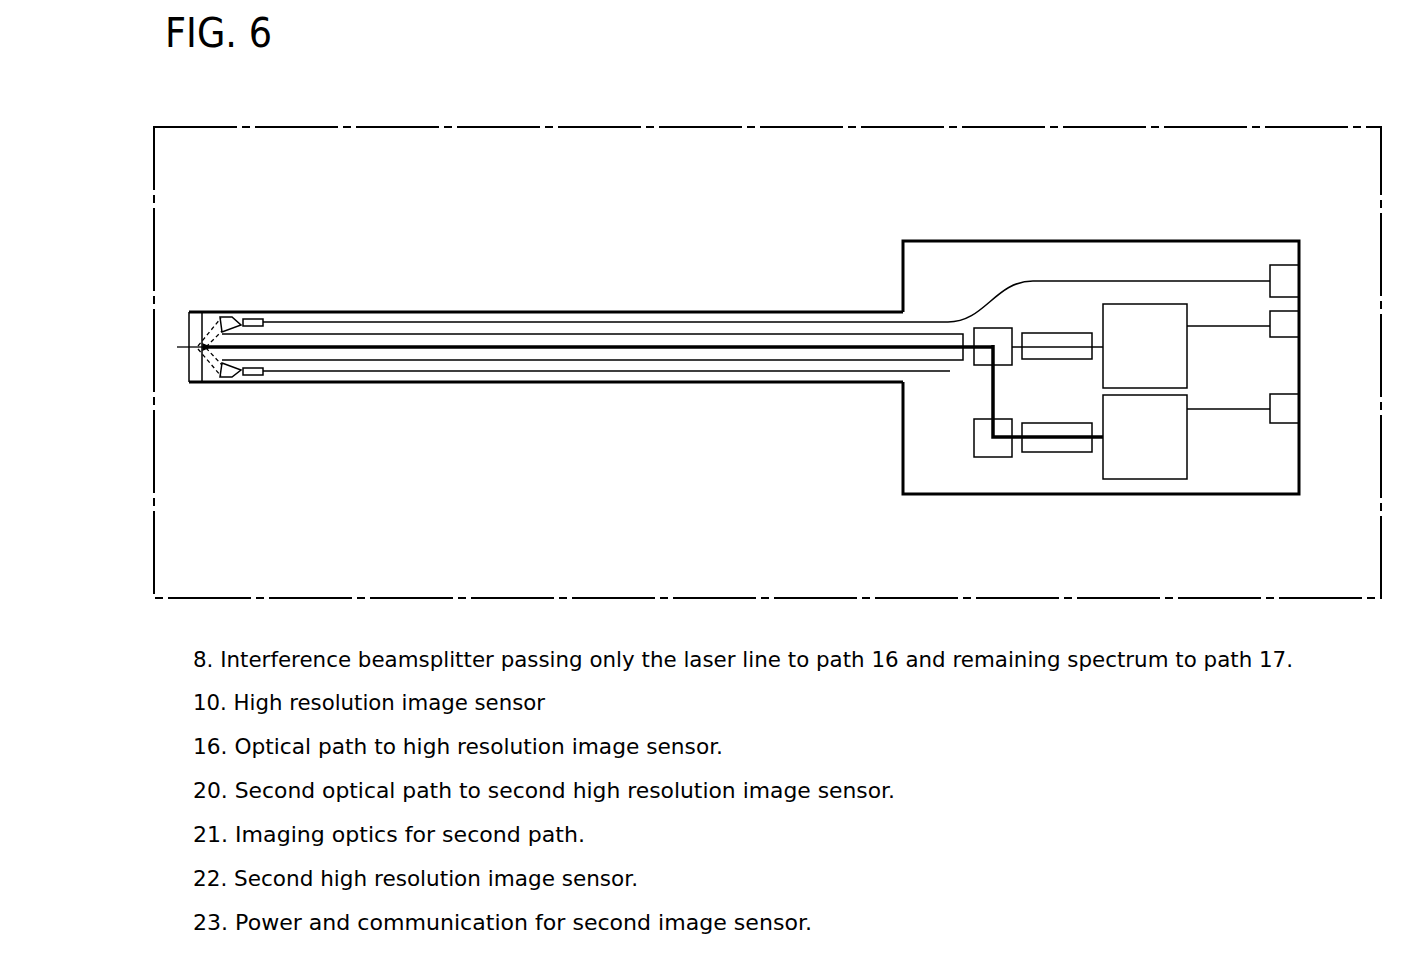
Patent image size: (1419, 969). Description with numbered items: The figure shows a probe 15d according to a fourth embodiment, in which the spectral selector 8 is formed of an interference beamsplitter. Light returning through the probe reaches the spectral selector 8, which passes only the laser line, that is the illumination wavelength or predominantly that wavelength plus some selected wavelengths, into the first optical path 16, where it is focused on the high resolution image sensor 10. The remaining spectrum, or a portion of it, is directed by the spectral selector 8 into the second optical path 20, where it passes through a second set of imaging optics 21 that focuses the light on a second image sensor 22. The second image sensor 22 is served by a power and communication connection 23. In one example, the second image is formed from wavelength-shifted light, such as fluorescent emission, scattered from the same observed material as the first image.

The probe 15d is at (697, 127).
The spectral selector 8 is at (995, 327).
The high resolution image sensor 10 is at (1150, 300).
The first optical path 16 is at (1048, 345).
The second optical path 20 is at (990, 395).
The second set of imaging optics 21 is at (1050, 452).
The second image sensor 22 is at (1125, 479).
The power and communication for second image sensor 23 is at (1300, 425).